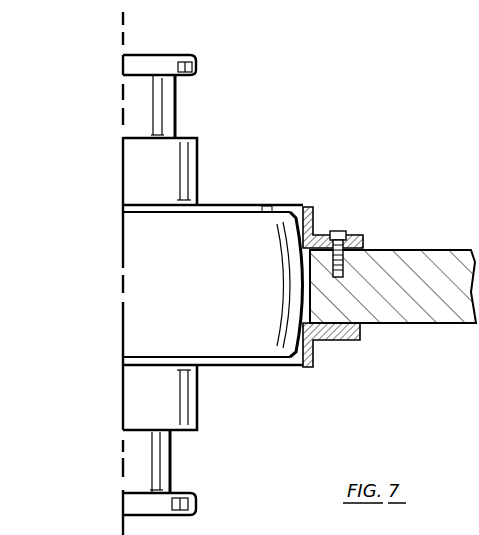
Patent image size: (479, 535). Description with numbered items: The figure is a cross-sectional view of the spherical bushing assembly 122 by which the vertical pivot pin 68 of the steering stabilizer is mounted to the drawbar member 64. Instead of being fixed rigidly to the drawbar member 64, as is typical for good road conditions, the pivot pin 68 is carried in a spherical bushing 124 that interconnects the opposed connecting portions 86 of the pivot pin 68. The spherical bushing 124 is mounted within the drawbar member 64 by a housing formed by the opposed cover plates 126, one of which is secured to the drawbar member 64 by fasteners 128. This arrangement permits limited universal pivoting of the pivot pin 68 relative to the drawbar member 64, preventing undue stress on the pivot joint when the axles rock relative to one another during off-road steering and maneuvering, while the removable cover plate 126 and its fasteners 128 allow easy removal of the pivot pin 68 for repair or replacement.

The drawbar member 64 is at (425, 243).
The vertical pivot pin 68 is at (232, 78).
The connecting portions 86 is at (178, 109).
The spherical bushing assembly 122 is at (300, 196).
The spherical bushing 124 is at (218, 296).
The cover plates 126 is at (316, 211).
The fasteners 128 is at (344, 276).